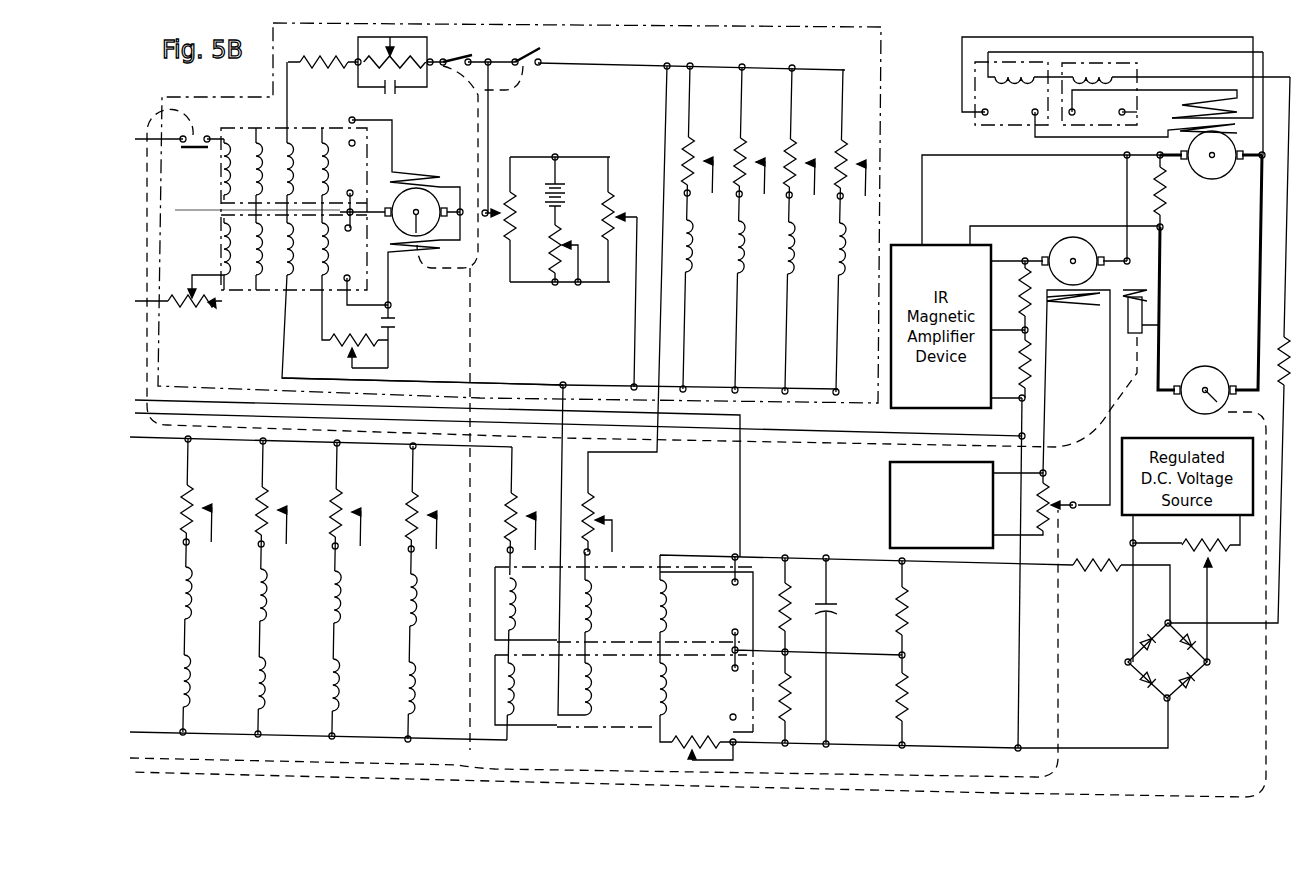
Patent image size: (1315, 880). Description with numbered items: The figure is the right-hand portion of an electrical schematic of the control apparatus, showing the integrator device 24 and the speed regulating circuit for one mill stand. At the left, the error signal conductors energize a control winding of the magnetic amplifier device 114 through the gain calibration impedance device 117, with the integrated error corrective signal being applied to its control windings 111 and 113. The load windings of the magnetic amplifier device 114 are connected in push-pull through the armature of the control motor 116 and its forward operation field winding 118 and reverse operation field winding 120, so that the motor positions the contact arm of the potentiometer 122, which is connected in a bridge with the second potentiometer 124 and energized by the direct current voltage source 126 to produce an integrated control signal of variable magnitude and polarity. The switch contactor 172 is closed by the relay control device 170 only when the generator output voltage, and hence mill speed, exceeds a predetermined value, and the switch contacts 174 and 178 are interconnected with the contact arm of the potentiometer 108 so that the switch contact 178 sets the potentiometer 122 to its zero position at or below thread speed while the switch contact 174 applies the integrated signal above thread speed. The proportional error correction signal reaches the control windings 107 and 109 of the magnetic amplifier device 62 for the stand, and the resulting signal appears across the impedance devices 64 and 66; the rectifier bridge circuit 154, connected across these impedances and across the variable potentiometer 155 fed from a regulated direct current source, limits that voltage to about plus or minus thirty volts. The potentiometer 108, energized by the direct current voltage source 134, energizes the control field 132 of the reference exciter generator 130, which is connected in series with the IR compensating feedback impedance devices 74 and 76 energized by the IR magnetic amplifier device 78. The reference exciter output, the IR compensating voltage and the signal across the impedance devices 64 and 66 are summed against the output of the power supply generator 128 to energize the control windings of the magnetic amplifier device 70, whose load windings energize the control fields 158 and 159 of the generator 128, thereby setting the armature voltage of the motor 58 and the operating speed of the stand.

The integrator device 24 is at (622, 60).
The motor 58 is at (1208, 372).
The magnetic amplifier device 62 is at (630, 606).
The impedance device 64 is at (906, 616).
The impedance device 66 is at (906, 706).
The magnetic amplifier device 70 is at (1116, 88).
The IR compensating feedback impedance device 74 is at (1010, 297).
The IR compensating feedback impedance device 76 is at (1010, 365).
The IR magnetic amplifier device 78 is at (957, 250).
The control winding 107 is at (513, 616).
The potentiometer 108 is at (1050, 489).
The control winding 109 is at (513, 702).
The control winding 111 is at (224, 182).
The control winding 113 is at (230, 256).
The magnetic amplifier device 114 is at (369, 223).
The control motor 116 is at (402, 200).
The gain calibration impedance device 117 is at (206, 314).
The forward operation field winding 118 is at (407, 178).
The reverse operation field winding 120 is at (407, 252).
The potentiometer 122 is at (521, 198).
The second potentiometer 124 is at (624, 200).
The direct current voltage source 126 is at (564, 198).
The power supply generator 128 is at (1195, 178).
The reference exciter generator 130 is at (1060, 258).
The control field 132 is at (1076, 397).
The direct current voltage source 134 is at (890, 482).
The rectifier bridge circuit 154 is at (1180, 673).
The variable potentiometer 155 is at (1225, 537).
The control field 158 is at (1185, 108).
The control field 159 is at (1175, 131).
The relay control device 170 is at (1142, 310).
The switch contactor 172 is at (179, 151).
The switch contact 174 is at (521, 49).
The switch contact 178 is at (459, 49).